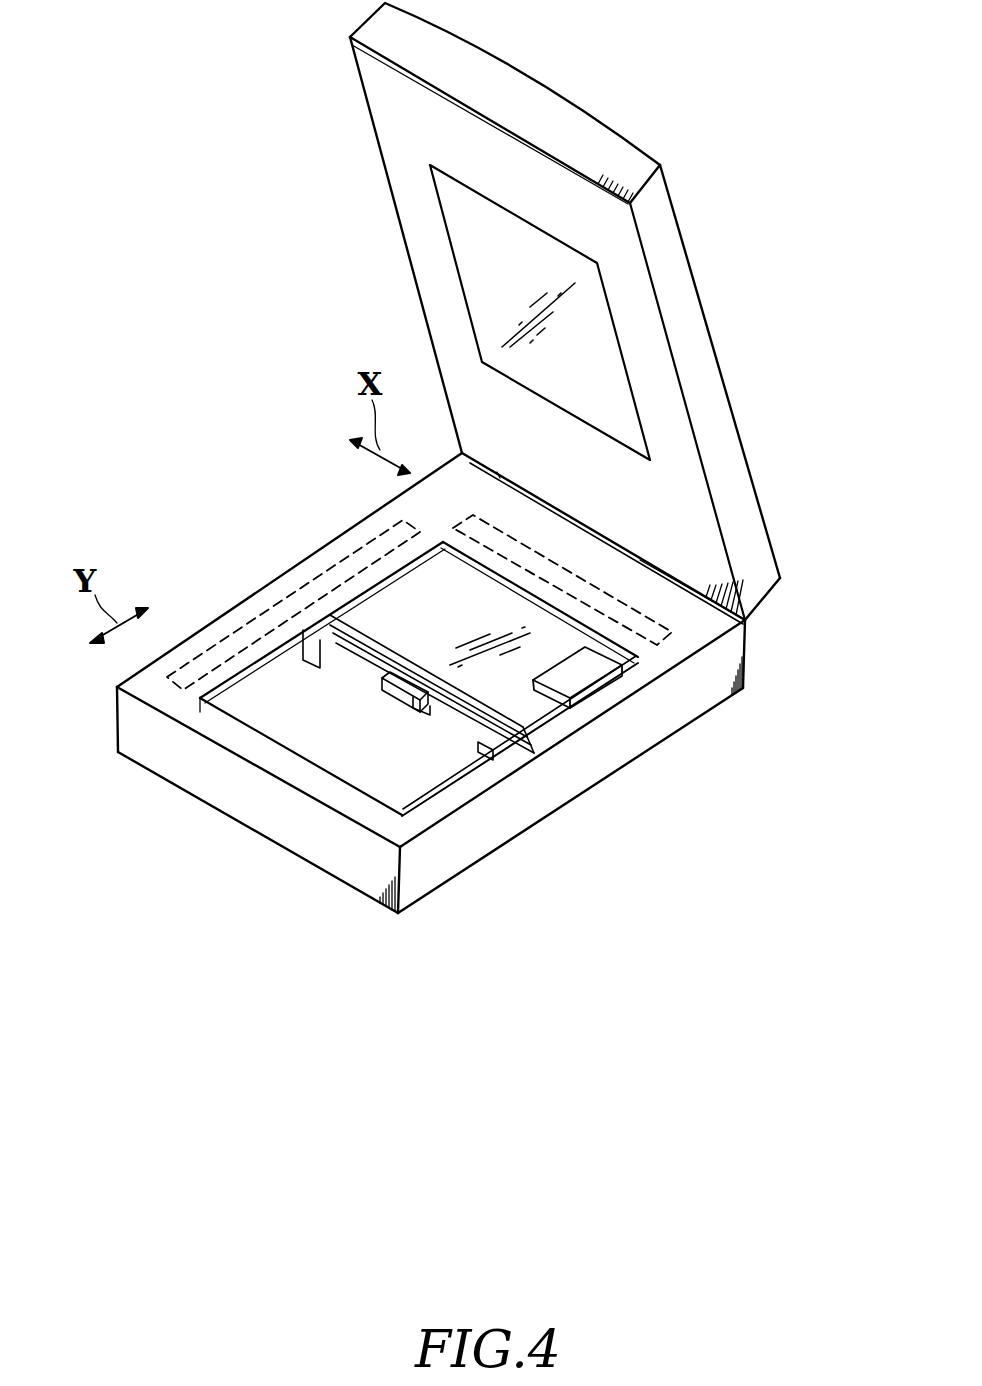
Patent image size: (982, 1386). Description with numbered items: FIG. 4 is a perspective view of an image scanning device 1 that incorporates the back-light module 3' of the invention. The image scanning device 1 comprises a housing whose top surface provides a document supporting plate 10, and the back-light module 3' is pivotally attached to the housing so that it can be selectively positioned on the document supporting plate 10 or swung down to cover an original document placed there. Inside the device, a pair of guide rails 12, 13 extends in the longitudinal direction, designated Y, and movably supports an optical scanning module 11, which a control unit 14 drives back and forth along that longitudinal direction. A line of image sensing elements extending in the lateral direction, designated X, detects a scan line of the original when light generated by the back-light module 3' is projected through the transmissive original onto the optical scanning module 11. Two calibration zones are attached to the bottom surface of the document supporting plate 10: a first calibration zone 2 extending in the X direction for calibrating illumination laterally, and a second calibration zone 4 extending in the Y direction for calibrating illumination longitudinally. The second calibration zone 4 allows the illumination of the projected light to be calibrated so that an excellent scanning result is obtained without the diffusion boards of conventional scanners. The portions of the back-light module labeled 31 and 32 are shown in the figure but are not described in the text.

The image scanning device 1 is at (492, 828).
The first calibration zone 2 is at (668, 638).
The back-light module 3' is at (601, 313).
The second calibration zone 4 is at (237, 631).
The document supporting plate 10 is at (313, 737).
The optical scanning module 11 is at (323, 617).
The guide rail 12 is at (410, 593).
The guide rail 13 is at (477, 767).
The control unit 14 is at (587, 675).
The cover body 31 is at (700, 358).
The cover pressing plate 32 is at (688, 448).